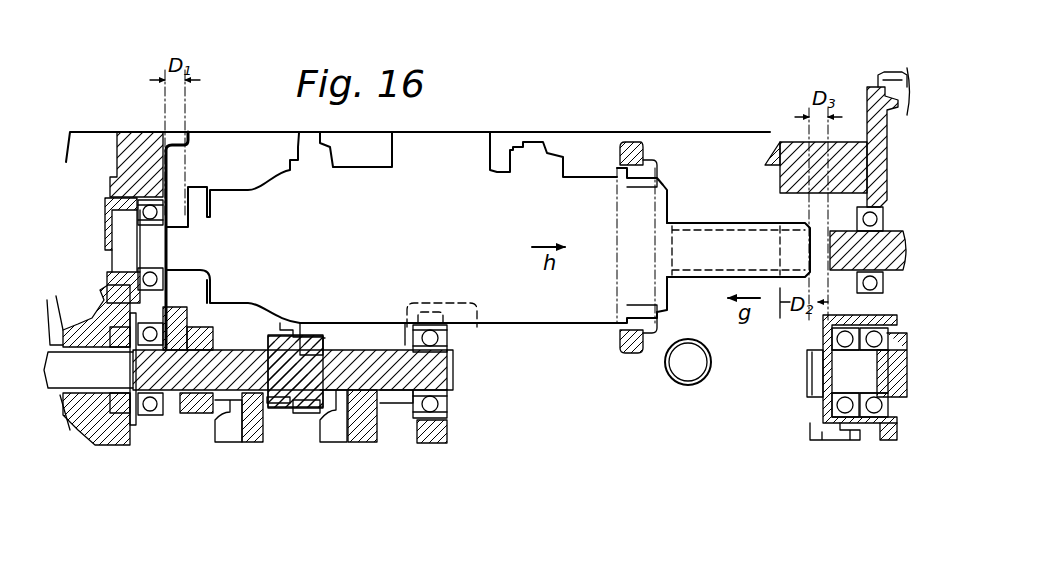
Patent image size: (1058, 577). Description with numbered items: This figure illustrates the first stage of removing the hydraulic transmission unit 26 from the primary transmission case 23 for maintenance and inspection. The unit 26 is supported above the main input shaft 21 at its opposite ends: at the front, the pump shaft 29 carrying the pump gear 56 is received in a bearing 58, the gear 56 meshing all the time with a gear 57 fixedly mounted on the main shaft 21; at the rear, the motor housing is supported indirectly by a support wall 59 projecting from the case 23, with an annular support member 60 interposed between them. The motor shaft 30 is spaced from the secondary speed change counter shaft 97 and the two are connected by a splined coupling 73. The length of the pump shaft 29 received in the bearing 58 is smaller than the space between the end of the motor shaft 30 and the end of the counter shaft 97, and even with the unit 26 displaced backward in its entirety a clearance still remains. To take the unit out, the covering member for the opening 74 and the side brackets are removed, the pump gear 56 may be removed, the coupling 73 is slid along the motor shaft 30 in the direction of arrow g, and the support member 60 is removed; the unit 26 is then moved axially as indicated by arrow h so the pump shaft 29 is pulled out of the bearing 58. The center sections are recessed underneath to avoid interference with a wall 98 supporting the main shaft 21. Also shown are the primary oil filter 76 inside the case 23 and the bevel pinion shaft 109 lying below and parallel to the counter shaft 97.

The main input shaft 21 is at (452, 385).
The primary transmission case 23 is at (146, 130).
The hydraulic transmission unit 26 is at (505, 324).
The pump shaft 29 is at (185, 280).
The motor shaft 30 is at (692, 278).
The pump gear 56 is at (212, 185).
The gear 57 is at (200, 423).
The bearing 58 is at (170, 175).
The support wall 59 is at (622, 345).
The annular support member 60 is at (655, 172).
The splined coupling 73 is at (748, 226).
The opening 74 is at (763, 140).
The oil filter 76 is at (698, 384).
The counter shaft 97 is at (890, 240).
The wall 98 is at (437, 432).
The bevel pinion shaft 109 is at (830, 388).